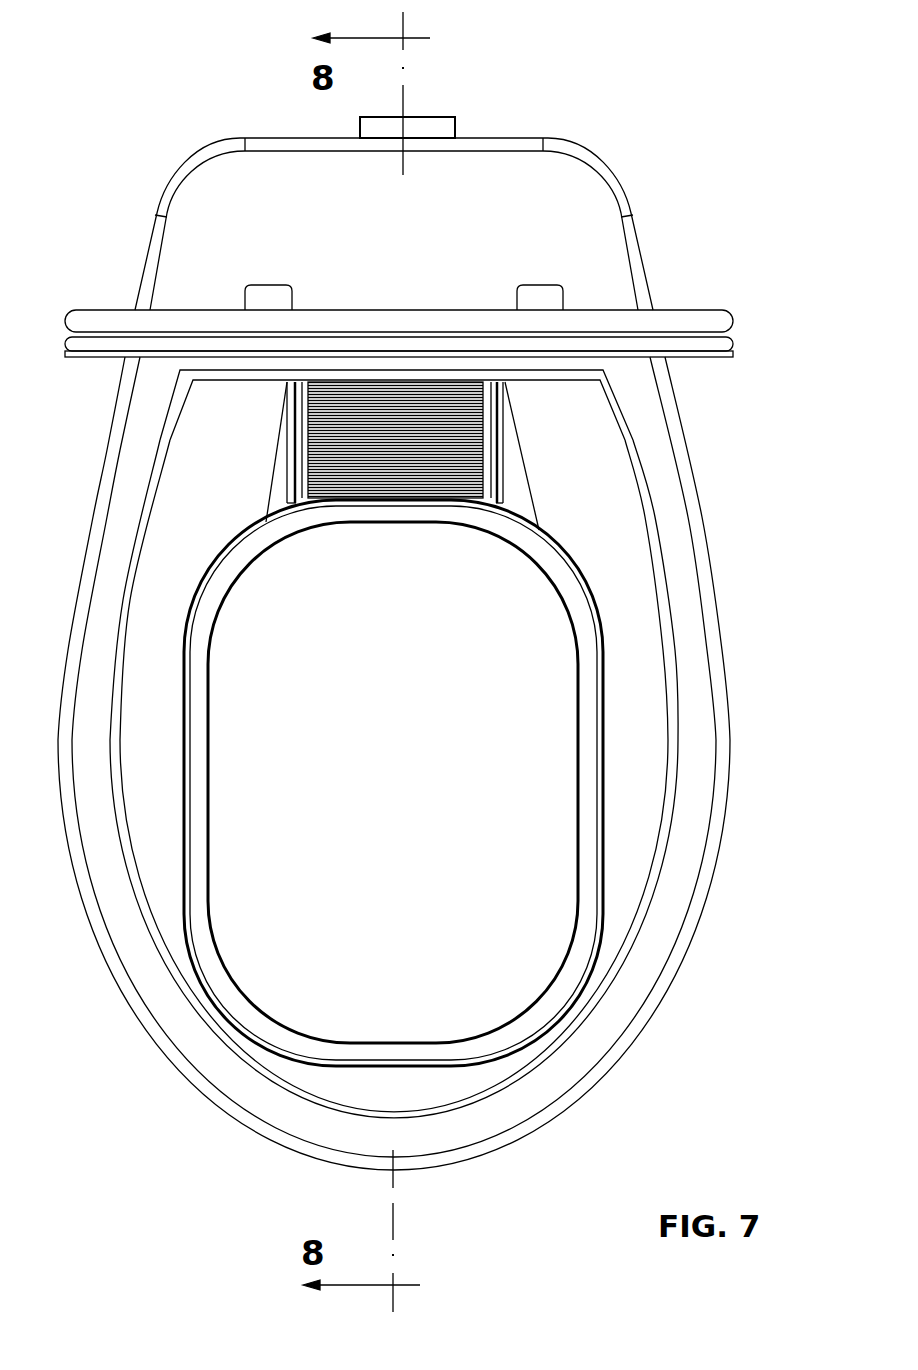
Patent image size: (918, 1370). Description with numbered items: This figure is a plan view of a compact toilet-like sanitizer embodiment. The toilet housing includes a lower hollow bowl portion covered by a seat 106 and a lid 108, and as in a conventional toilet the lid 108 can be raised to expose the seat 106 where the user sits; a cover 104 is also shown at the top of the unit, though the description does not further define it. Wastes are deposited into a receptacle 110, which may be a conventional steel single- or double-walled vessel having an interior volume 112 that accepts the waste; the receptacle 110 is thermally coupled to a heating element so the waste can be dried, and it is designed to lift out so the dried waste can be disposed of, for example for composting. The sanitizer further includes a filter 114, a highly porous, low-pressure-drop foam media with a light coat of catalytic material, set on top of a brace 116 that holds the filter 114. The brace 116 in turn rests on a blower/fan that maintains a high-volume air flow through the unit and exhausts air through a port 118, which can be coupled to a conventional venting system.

The lid 104 is at (448, 257).
The seat 106 is at (732, 347).
The lid 108 is at (718, 322).
The receptacle 110 is at (395, 888).
The interior volume 112 is at (403, 761).
The filter 114 is at (442, 458).
The brace 116 is at (292, 445).
The port 118 is at (447, 126).